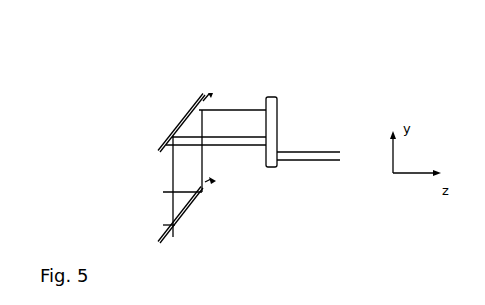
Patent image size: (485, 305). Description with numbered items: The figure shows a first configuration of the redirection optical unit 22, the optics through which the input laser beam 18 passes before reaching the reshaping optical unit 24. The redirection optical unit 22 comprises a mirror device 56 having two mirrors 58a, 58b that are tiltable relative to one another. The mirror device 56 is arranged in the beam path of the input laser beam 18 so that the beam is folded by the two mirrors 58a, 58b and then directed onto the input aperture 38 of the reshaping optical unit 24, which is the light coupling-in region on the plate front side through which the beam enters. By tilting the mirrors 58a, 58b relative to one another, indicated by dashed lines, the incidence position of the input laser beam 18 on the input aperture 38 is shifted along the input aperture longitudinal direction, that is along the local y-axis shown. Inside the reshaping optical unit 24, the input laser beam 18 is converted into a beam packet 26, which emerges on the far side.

The redirection optical unit 22 is at (243, 158).
The mirror device 56 is at (176, 78).
The first mirror 58a is at (167, 142).
The second mirror 58b is at (168, 236).
The input laser beam 18 is at (222, 109).
The reshaping optical unit 24 is at (269, 99).
The input aperture 38 is at (264, 99).
The beam packet 26 is at (325, 151).